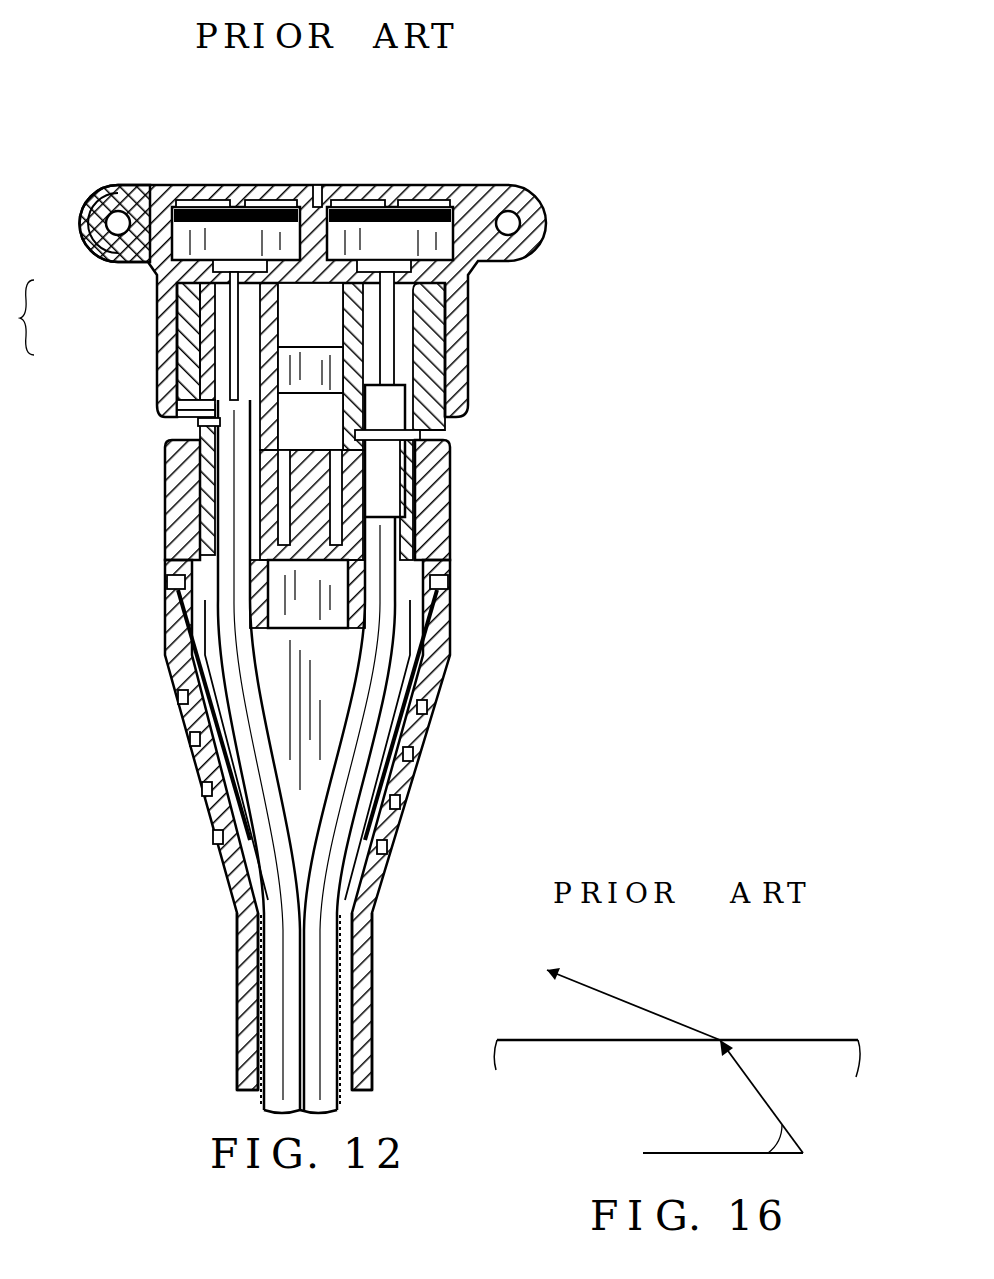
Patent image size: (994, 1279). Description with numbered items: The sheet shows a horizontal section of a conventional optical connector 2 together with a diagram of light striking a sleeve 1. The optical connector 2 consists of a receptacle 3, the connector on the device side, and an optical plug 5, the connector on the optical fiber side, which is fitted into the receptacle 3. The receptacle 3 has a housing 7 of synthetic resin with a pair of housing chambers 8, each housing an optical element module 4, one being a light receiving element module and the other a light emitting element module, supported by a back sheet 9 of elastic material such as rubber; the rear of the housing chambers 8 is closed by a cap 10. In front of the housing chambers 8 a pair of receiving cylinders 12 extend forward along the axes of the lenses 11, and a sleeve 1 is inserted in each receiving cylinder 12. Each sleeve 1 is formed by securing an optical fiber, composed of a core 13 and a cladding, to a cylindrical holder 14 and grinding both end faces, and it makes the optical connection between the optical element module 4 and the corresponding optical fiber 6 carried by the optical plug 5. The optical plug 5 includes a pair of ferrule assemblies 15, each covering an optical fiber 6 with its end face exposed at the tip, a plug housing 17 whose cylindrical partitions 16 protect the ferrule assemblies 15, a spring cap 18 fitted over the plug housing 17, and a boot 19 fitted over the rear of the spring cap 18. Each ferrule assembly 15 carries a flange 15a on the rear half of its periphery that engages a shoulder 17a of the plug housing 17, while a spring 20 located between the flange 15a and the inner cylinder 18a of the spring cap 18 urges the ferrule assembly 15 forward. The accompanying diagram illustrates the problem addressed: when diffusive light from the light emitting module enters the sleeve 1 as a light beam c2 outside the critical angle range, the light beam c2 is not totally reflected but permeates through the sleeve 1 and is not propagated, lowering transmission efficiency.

In FIG. 12, the sleeve 1 is at (472, 322).
In FIG. 16, the sleeve 1 is at (750, 1025).
In FIG. 12, the optical connector 2 is at (466, 155).
In FIG. 12, the receptacle 3 is at (546, 198).
In FIG. 12, the optical element module 4 is at (213, 240).
In FIG. 12, the optical plug 5 is at (456, 607).
In FIG. 12, the optical fiber 6 is at (177, 375).
In FIG. 12, the housing 7 is at (177, 417).
In FIG. 12, the housing chamber 8 is at (182, 284).
In FIG. 12, the back sheet 9 is at (192, 200).
In FIG. 12, the cap 10 is at (320, 200).
In FIG. 12, the lens 11 is at (273, 205).
In FIG. 12, the receiving cylinder 12 is at (157, 378).
In FIG. 12, the core 13 is at (152, 312).
In FIG. 16, the core 13 is at (577, 1072).
In FIG. 12, the cylindrical holder 14 is at (155, 283).
In FIG. 12, the ferrule assembly 15 is at (178, 432).
In FIG. 12, the flange 15a is at (190, 455).
In FIG. 12, the cylindrical partition 16 is at (332, 330).
In FIG. 12, the plug housing 17 is at (157, 362).
In FIG. 12, the shoulder 17a is at (262, 408).
In FIG. 12, the spring cap 18 is at (447, 550).
In FIG. 12, the inner cylinder 18a is at (172, 577).
In FIG. 12, the boot 19 is at (427, 680).
In FIG. 12, the spring 20 is at (165, 520).
In FIG. 16, the light beam c2 is at (767, 1095).